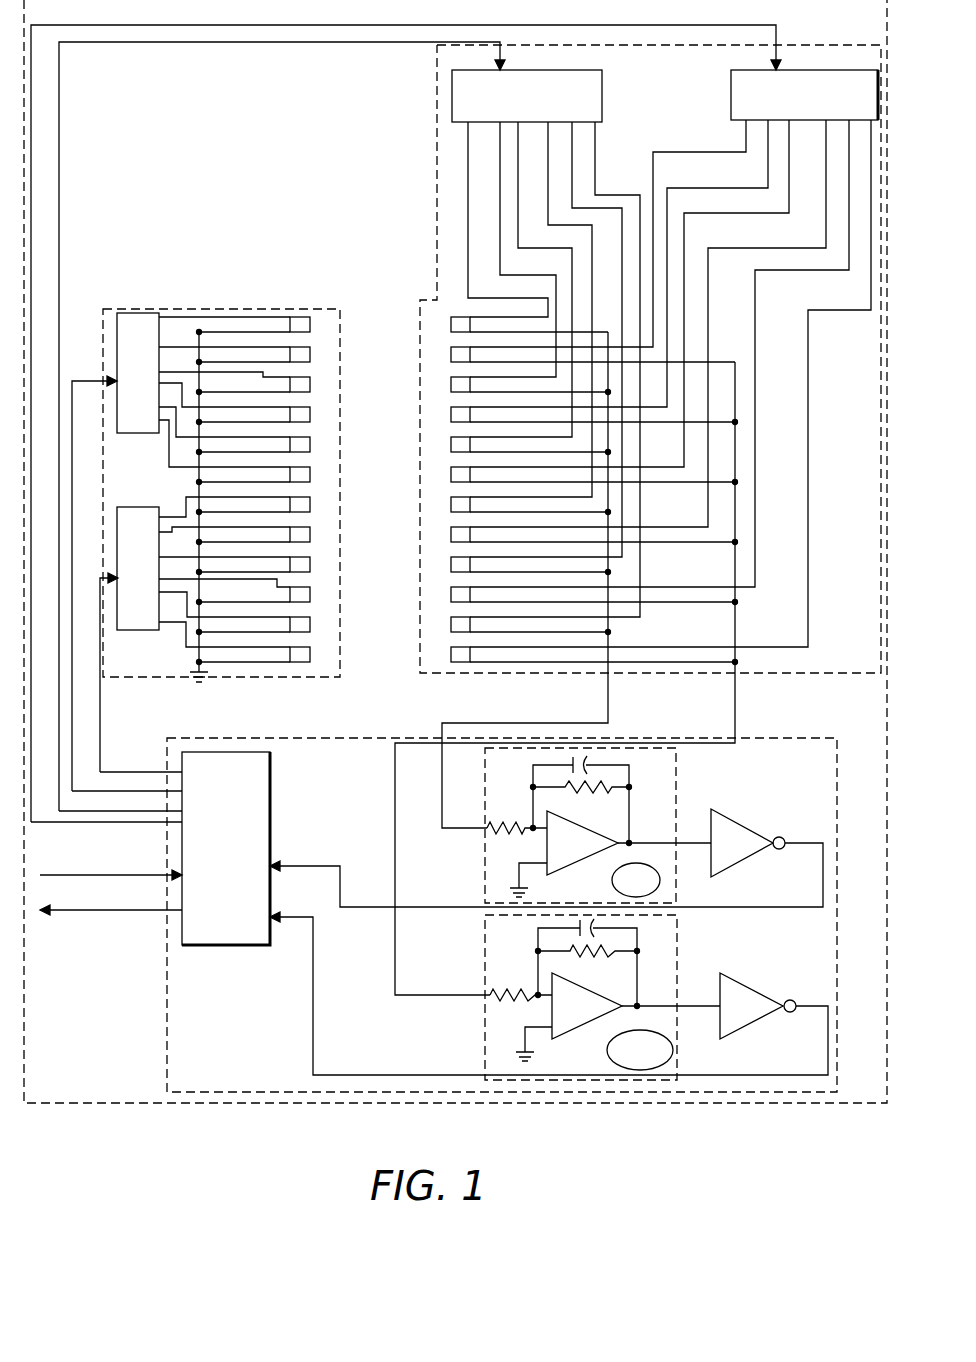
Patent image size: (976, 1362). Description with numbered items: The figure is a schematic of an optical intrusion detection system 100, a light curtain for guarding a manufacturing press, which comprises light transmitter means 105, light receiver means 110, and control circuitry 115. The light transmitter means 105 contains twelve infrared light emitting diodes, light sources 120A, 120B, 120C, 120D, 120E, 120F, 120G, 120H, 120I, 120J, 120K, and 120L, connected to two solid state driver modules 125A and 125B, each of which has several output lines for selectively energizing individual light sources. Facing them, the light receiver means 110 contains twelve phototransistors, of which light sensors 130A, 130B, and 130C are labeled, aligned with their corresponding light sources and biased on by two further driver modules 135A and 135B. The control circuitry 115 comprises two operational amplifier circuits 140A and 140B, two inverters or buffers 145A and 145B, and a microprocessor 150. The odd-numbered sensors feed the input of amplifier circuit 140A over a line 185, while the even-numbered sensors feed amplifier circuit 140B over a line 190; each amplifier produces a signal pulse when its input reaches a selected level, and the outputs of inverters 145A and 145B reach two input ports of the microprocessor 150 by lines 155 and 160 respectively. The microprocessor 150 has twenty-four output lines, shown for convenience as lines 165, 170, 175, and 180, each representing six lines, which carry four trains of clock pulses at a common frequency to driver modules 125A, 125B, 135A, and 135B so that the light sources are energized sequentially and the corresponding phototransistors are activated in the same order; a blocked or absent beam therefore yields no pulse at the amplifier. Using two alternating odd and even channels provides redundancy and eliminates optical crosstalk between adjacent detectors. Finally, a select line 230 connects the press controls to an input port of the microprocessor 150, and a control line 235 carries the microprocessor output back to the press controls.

The optical intrusion detection system 100 is at (128, 1103).
The light transmitter means 105 is at (130, 678).
The light receiver means 110 is at (597, 680).
The control circuitry 115 is at (167, 1023).
The light source 120A is at (311, 326).
The light source 120B is at (311, 356).
The light source 120C is at (311, 386).
The light source 120D is at (311, 416).
The light source 120E is at (311, 446).
The light source 120F is at (311, 476).
The light source 120G is at (311, 506).
The light source 120H is at (311, 536).
The light source 120I is at (311, 566).
The light source 120J is at (311, 596).
The light source 120K is at (311, 626).
The light source 120L is at (311, 656).
The driver module 125A is at (113, 312).
The driver module 125B is at (160, 506).
The light sensor 130A is at (451, 320).
The light sensor 130B is at (451, 350).
The light sensor 130C is at (451, 380).
The driver module 135A is at (602, 78).
The driver module 135B is at (731, 101).
The amplifier circuit 140A is at (678, 790).
The amplifier circuit 140B is at (680, 958).
The inverter or buffer 145A is at (741, 818).
The inverter or buffer 145B is at (748, 985).
The microprocessor 150 is at (277, 796).
The line 155 is at (303, 866).
The line 160 is at (313, 972).
The line 165 is at (92, 380).
The line 170 is at (101, 740).
The line 175 is at (59, 158).
The line 180 is at (318, 25).
The line 185 is at (612, 718).
The line 190 is at (737, 722).
The select line 230 is at (138, 841).
The control line 235 is at (130, 910).